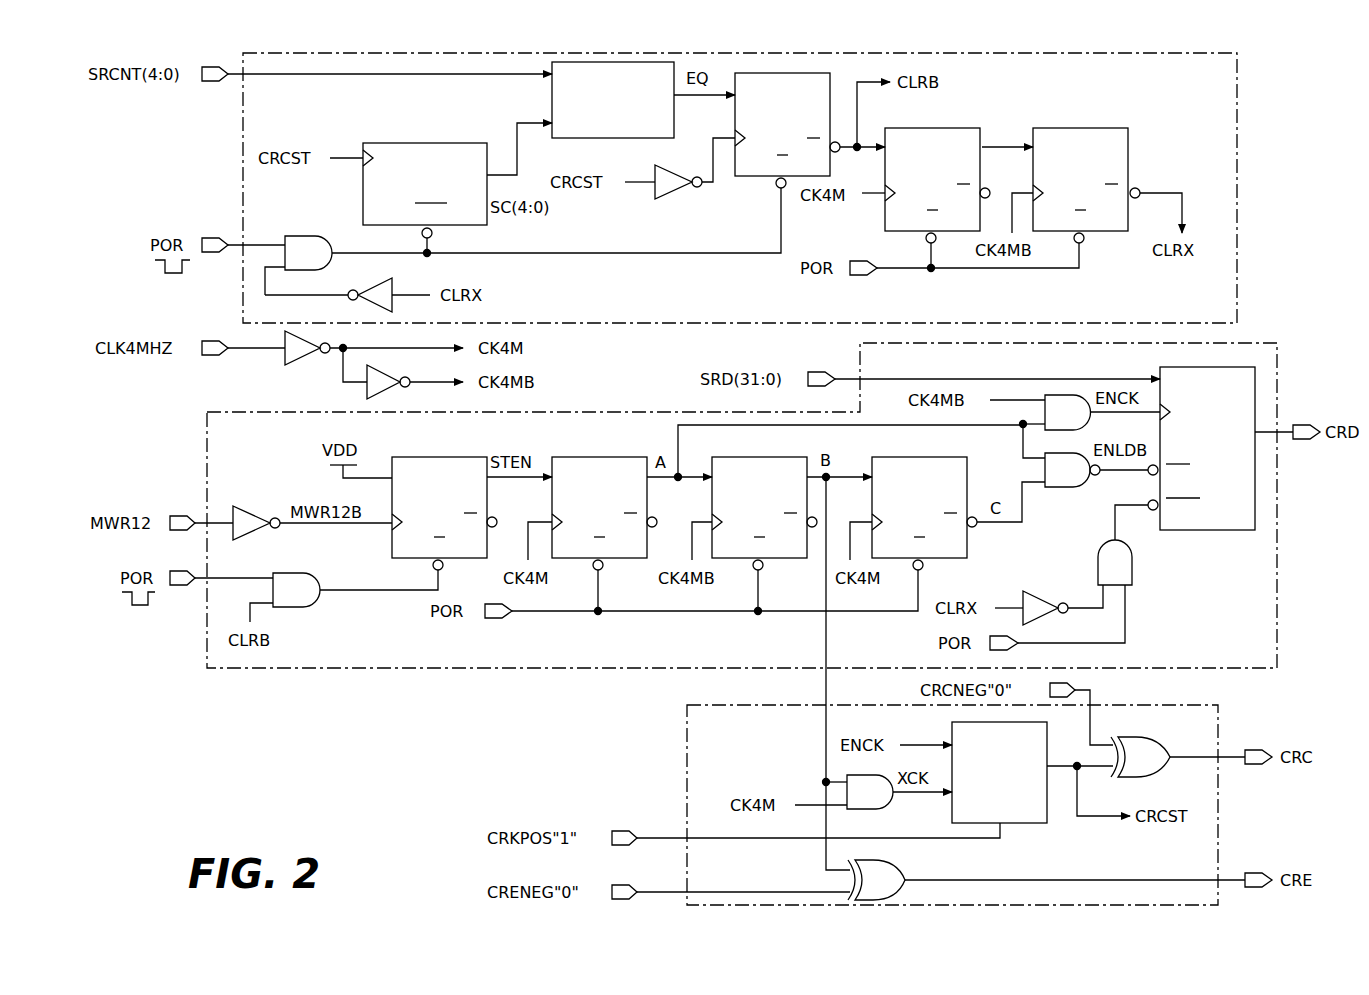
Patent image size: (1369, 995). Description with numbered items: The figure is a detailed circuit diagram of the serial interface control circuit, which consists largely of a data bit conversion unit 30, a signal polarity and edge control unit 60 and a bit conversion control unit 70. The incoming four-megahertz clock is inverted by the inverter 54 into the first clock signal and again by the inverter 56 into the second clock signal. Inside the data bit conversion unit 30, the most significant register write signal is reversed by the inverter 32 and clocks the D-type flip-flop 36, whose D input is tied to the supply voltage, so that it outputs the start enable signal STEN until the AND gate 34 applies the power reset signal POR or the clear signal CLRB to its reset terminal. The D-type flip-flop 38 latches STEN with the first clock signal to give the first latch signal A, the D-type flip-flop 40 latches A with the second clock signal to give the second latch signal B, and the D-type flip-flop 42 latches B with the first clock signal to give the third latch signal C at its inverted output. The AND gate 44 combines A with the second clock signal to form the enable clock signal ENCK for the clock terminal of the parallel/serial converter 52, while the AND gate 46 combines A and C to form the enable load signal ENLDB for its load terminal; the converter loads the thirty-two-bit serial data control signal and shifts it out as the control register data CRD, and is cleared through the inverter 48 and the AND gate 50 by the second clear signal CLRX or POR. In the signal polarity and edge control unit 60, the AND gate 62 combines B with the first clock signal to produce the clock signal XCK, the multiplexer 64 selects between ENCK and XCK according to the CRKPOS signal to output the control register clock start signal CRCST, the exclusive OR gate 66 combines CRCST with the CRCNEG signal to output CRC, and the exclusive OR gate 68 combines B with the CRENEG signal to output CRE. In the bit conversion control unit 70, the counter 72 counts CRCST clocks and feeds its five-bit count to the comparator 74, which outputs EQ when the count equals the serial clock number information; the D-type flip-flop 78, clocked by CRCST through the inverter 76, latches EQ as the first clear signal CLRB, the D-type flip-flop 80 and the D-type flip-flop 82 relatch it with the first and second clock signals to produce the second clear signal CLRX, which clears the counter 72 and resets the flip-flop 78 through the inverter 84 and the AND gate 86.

The data bit conversion unit 30 is at (385, 668).
The inverter 32 is at (255, 516).
The AND gate 34 is at (310, 573).
The D-type flip-flop 36 is at (425, 457).
The D-type flip-flop 38 is at (598, 457).
The D-type flip-flop 40 is at (755, 457).
The D-type flip-flop 42 is at (915, 457).
The AND gate 44 is at (1050, 395).
The AND gate 46 is at (1058, 487).
The inverter 48 is at (1038, 594).
The AND gate 50 is at (1135, 568).
The parallel/serial converter 52 is at (1218, 530).
The inverter 54 is at (288, 360).
The inverter 56 is at (367, 386).
The signal polarity and edge control unit 60 is at (687, 735).
The AND gate 62 is at (885, 810).
The multiplexer 64 is at (1017, 823).
The exclusive OR gate 66 is at (1150, 738).
The exclusive OR gate 68 is at (905, 868).
The bit conversion control unit 70 is at (1237, 120).
The counter 72 is at (437, 143).
The comparator 74 is at (552, 93).
The inverter 76 is at (662, 198).
The D-type flip-flop 78 is at (756, 177).
The D-type flip-flop 80 is at (950, 128).
The D-type flip-flop 82 is at (1097, 128).
The inverter 84 is at (377, 284).
The AND gate 86 is at (303, 236).